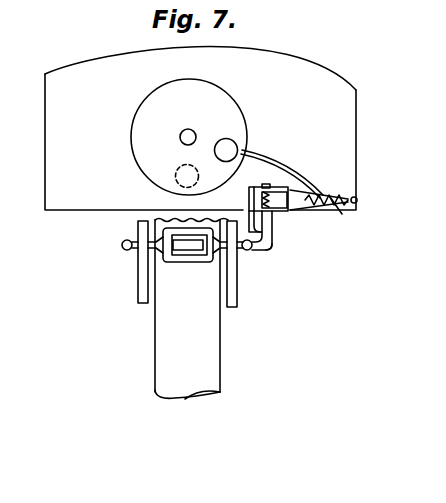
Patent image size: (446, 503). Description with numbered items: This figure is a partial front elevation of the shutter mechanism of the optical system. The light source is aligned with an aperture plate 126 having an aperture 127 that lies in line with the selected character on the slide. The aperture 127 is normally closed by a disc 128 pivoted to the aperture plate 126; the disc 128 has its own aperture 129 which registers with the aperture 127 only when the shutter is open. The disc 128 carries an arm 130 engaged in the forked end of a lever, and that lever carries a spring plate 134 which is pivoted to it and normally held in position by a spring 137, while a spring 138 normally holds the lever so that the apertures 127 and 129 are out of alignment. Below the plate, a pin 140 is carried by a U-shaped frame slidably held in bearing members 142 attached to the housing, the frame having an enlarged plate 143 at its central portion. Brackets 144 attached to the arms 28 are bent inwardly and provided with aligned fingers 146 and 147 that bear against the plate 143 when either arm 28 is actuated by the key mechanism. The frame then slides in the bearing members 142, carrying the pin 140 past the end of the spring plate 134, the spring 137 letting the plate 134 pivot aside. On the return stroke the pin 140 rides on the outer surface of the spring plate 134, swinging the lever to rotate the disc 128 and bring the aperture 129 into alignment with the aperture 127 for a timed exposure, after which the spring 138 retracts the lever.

The aperture plate 126 is at (80, 67).
The disc 128 is at (143, 105).
The aperture 129 is at (237, 143).
The aperture 127 is at (170, 190).
The arm 130 is at (292, 175).
The spring 137 is at (265, 189).
The spring 138 is at (326, 206).
The spring plate 134 is at (258, 230).
The pin 140 is at (274, 238).
The arm 28 is at (140, 297).
The enlarged plate 143 is at (172, 263).
The bracket 144 is at (152, 239).
The bearing member 142 is at (126, 251).
The finger 146 is at (192, 250).
The finger 147 is at (203, 263).